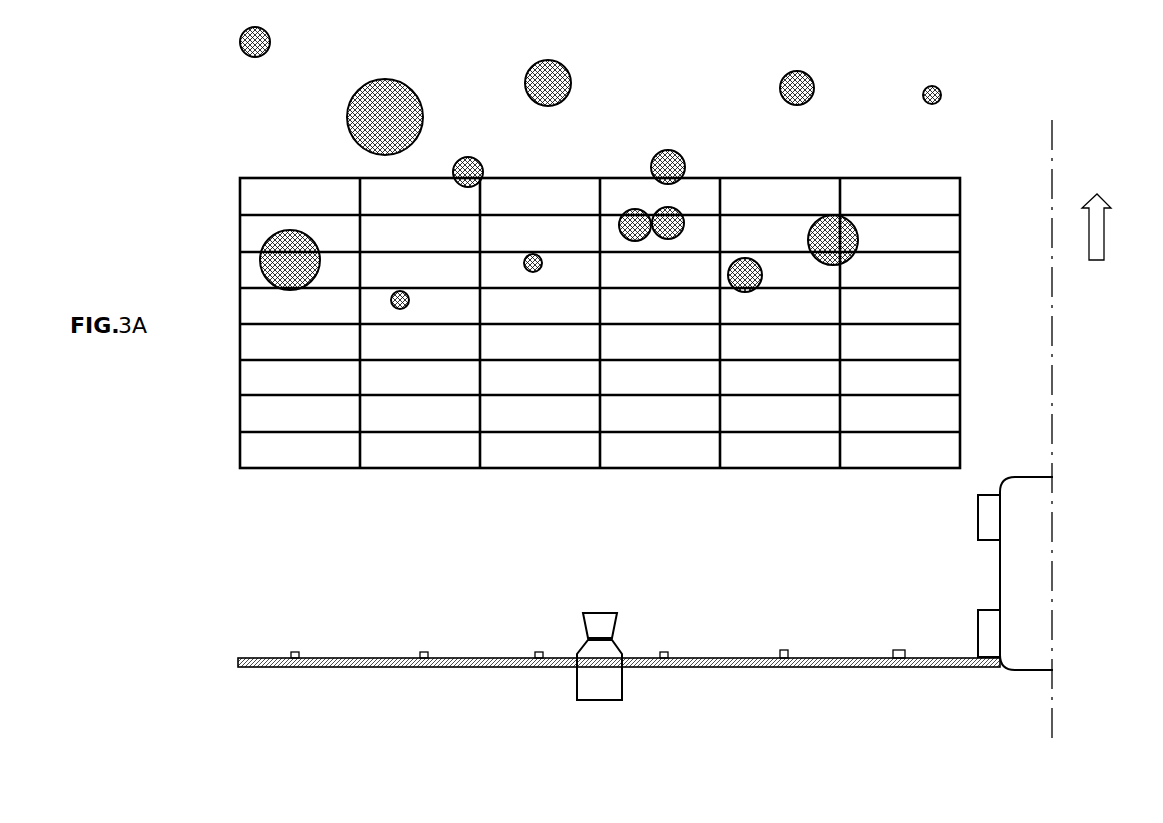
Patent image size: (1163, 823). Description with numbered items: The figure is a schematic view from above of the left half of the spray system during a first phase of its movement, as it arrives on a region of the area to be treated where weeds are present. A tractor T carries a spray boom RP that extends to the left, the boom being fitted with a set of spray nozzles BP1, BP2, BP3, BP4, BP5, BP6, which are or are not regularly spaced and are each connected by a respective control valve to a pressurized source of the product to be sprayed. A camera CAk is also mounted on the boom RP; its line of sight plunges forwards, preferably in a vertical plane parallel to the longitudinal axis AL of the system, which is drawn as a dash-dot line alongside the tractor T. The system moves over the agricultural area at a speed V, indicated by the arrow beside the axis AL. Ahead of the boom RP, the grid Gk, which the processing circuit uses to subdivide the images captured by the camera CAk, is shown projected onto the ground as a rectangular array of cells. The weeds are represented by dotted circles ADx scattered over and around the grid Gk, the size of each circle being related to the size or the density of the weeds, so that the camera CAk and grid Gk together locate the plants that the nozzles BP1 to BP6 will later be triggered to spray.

The grid Gk is at (236, 362).
The dotted circles ADx is at (525, 92).
The longitudinal axis AL is at (1052, 148).
The speed V is at (1104, 227).
The tractor T is at (1035, 583).
The spray boom RP is at (819, 655).
The spray nozzle BP1 is at (297, 650).
The spray nozzle BP2 is at (424, 652).
The spray nozzle BP3 is at (537, 652).
The spray nozzle BP4 is at (670, 652).
The spray nozzle BP5 is at (772, 660).
The spray nozzle BP6 is at (905, 652).
The camera CAk is at (626, 655).